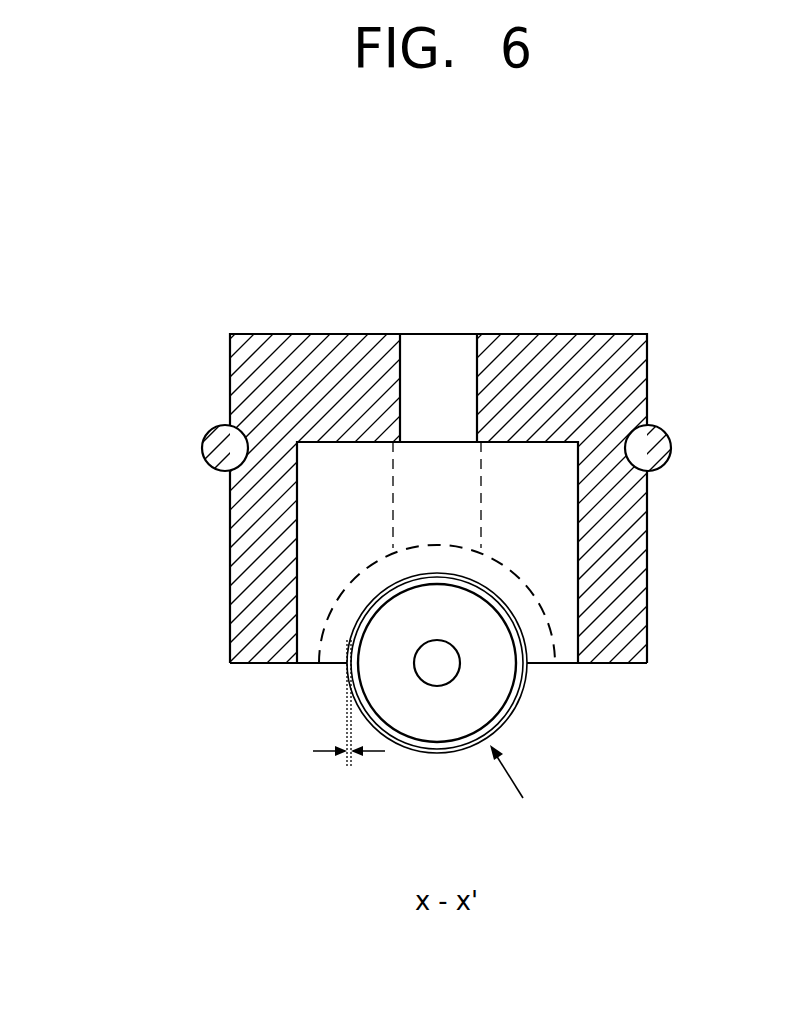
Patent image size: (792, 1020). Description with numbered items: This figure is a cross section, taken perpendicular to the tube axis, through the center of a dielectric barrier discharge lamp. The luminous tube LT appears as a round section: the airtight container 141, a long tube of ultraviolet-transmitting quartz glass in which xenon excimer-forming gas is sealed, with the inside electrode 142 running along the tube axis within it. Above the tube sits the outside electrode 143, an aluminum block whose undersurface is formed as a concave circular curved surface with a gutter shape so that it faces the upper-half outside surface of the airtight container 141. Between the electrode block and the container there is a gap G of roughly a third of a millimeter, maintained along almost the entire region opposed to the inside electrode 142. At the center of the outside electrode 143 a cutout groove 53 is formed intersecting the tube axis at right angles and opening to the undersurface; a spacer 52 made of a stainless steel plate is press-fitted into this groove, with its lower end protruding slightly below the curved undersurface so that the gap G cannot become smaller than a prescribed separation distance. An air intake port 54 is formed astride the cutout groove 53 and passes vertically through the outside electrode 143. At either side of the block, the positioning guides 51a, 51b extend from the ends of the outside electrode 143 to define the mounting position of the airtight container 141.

The outside electrode 143 is at (338, 334).
The air intake port 54 is at (440, 340).
The spacer 52 is at (333, 545).
The cutout groove 53 is at (571, 510).
The positioning guide 51a is at (670, 444).
The positioning guide 51b is at (203, 443).
The airtight container 141 is at (437, 753).
The inside electrode 142 is at (458, 673).
The luminous tube LT is at (519, 789).
The gap G is at (336, 703).